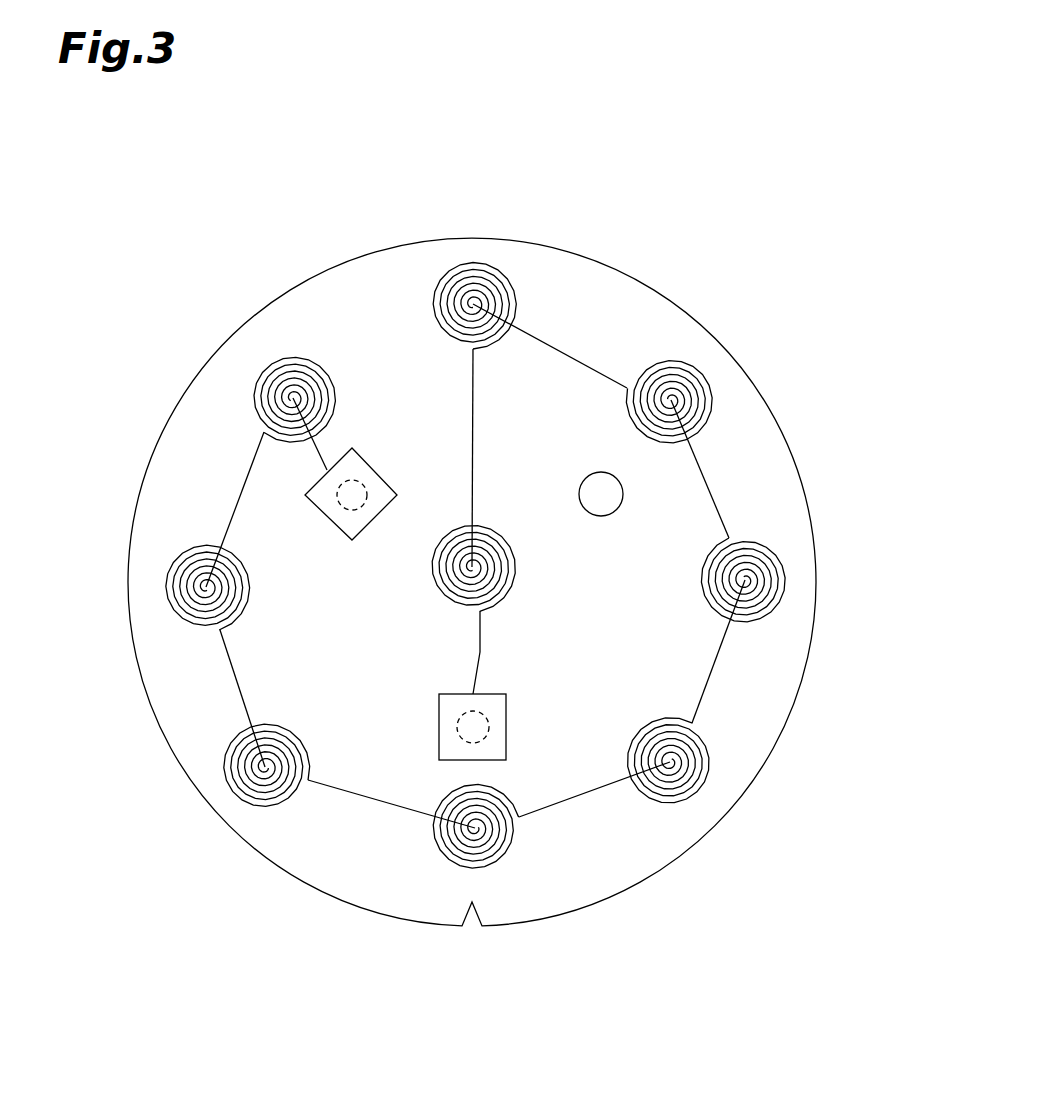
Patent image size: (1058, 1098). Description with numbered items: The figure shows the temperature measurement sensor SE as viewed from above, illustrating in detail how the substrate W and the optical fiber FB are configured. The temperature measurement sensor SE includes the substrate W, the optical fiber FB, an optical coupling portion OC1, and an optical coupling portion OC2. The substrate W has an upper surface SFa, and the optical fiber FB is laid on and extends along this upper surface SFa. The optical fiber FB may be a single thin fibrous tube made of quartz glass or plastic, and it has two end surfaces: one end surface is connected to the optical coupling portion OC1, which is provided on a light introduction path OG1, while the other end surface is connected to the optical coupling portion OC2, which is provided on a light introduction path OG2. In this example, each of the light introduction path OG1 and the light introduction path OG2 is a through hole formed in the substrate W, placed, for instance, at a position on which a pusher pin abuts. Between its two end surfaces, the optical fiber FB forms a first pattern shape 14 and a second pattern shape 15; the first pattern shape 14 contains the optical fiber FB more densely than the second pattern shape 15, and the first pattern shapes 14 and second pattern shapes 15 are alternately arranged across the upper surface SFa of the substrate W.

The temperature measurement sensor SE is at (584, 198).
The substrate W is at (650, 291).
The upper surface SFa is at (780, 468).
The optical fiber FB is at (887, 555).
The second pattern shape 15 is at (805, 562).
The first pattern shape 14 is at (737, 648).
The optical coupling portion OC1 is at (358, 542).
The light introduction path OG1 is at (360, 478).
The optical coupling portion OC2 is at (438, 714).
The light introduction path OG2 is at (490, 727).